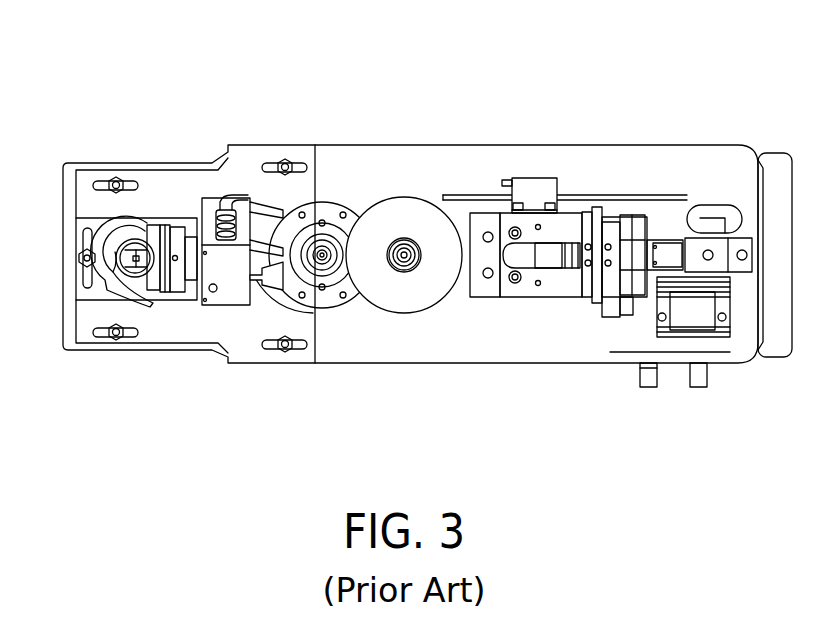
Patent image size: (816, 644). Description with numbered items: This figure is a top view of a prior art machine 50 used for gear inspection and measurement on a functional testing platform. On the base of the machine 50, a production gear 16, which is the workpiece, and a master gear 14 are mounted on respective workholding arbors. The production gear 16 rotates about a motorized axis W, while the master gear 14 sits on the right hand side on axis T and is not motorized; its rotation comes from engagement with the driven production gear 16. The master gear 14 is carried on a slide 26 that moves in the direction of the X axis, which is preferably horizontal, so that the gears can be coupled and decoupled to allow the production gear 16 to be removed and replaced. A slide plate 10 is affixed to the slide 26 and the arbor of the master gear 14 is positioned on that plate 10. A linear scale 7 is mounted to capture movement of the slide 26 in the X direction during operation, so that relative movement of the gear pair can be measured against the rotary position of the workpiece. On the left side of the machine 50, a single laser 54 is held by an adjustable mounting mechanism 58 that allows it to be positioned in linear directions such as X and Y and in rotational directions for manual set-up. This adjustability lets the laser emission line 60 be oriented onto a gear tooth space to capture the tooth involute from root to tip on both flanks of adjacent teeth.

The machine 50 is at (199, 133).
The adjustable mounting mechanism 58 is at (103, 230).
The production gear 16 is at (314, 243).
The master gear 14 is at (404, 210).
The linear scale 7 is at (463, 195).
The slide plate 10 is at (477, 232).
The slide 26 is at (567, 227).
The laser 54 is at (233, 282).
The laser emission line 60 is at (283, 270).
The motorized axis W is at (323, 257).
The axis of master gear T is at (417, 267).
The X axis X is at (725, 117).
The Y direction Y is at (37, 210).